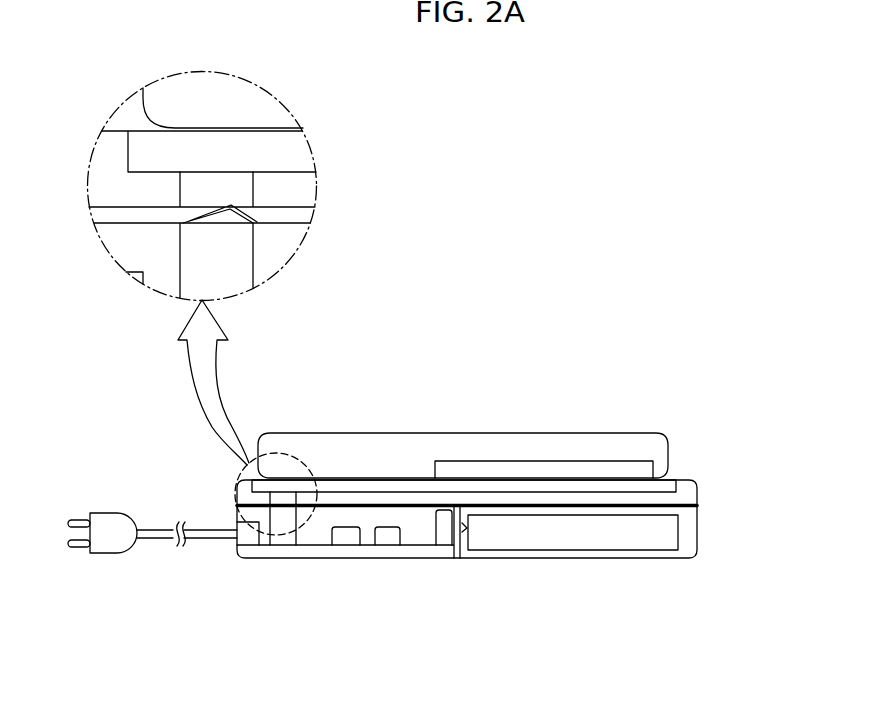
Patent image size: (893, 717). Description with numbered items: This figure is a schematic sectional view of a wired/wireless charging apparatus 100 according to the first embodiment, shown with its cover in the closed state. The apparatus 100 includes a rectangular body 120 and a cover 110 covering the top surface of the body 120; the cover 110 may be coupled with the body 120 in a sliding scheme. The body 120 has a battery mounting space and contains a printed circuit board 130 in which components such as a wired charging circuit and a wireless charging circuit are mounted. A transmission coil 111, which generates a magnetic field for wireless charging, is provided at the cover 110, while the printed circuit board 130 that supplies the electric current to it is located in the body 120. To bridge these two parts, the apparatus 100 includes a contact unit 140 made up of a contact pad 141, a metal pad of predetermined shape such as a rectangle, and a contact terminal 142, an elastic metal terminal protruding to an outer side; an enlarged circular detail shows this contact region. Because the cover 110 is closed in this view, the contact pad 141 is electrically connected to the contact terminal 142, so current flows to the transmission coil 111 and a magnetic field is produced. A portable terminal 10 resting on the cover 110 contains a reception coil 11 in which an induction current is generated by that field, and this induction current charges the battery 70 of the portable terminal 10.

The portable terminal 10 is at (617, 433).
The reception coil 11 is at (640, 461).
The transmission coil 111 is at (670, 485).
The wired/wireless charging apparatus 100 is at (747, 492).
The cover 110 is at (700, 482).
The body 120 is at (700, 506).
The printed circuit board 130 is at (315, 548).
The battery 70 is at (574, 548).
The contact unit 140 is at (266, 401).
The contact pad 141 is at (275, 498).
The contact terminal 142 is at (283, 526).